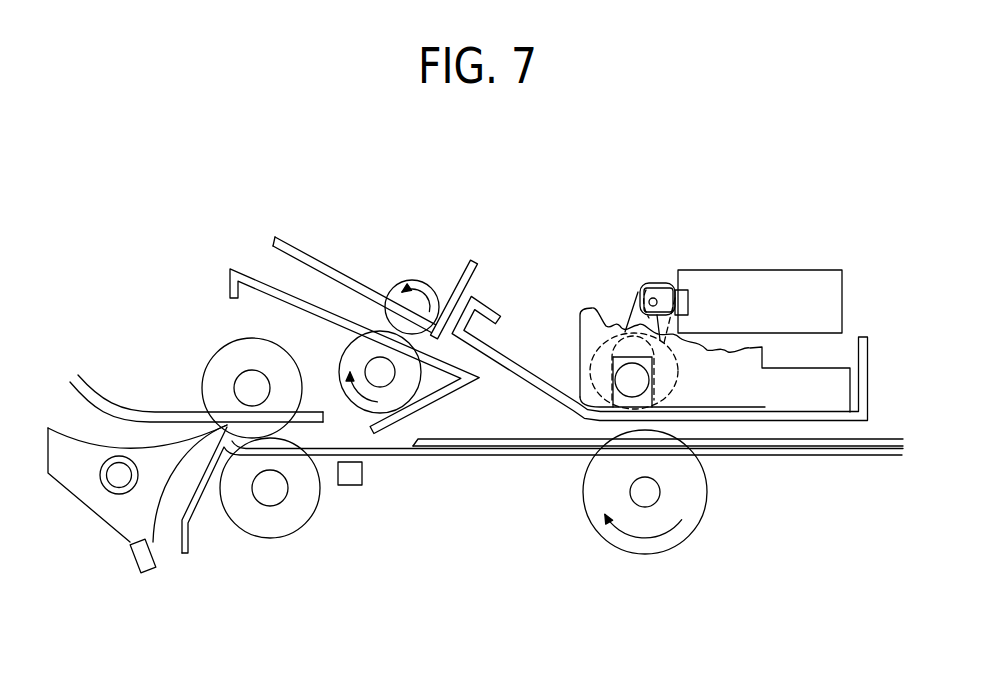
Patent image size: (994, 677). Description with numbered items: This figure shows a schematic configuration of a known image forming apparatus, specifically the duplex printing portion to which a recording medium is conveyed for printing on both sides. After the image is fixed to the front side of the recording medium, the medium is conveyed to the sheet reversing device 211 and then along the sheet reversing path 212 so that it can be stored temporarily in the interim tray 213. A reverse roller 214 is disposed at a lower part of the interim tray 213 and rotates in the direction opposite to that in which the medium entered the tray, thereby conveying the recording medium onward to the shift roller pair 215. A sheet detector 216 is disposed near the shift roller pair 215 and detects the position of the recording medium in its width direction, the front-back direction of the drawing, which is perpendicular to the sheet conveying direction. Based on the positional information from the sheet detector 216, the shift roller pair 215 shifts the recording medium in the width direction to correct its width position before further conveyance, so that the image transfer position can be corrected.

The sheet reversing device 211 is at (140, 273).
The sheet reversing path 212 is at (272, 270).
The interim tray 213 is at (808, 461).
The reverse roller 214 is at (650, 557).
The shift roller pair 215 is at (212, 348).
The sheet detector 216 is at (350, 485).